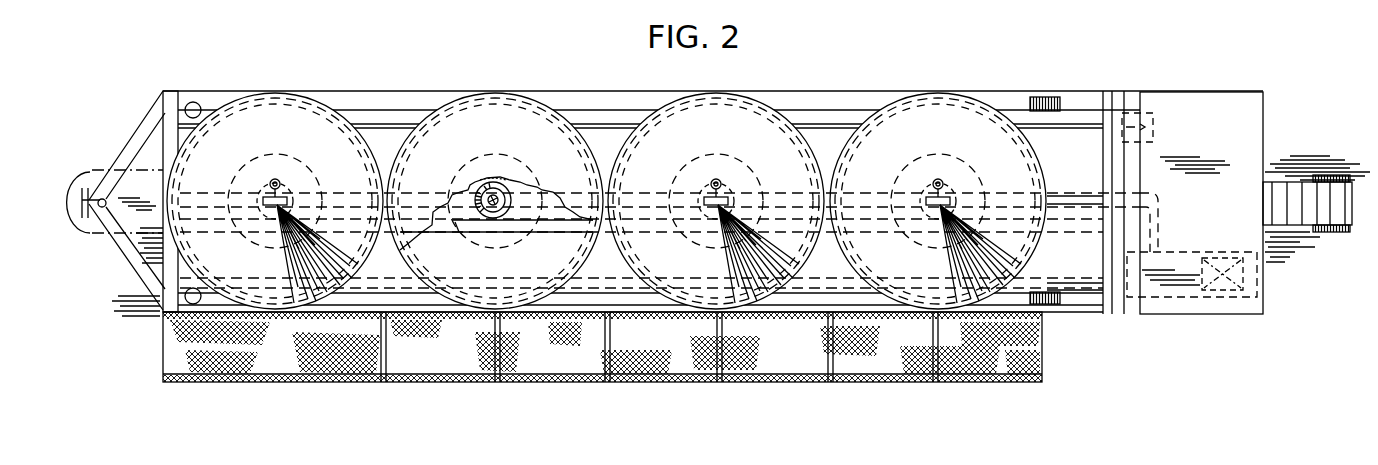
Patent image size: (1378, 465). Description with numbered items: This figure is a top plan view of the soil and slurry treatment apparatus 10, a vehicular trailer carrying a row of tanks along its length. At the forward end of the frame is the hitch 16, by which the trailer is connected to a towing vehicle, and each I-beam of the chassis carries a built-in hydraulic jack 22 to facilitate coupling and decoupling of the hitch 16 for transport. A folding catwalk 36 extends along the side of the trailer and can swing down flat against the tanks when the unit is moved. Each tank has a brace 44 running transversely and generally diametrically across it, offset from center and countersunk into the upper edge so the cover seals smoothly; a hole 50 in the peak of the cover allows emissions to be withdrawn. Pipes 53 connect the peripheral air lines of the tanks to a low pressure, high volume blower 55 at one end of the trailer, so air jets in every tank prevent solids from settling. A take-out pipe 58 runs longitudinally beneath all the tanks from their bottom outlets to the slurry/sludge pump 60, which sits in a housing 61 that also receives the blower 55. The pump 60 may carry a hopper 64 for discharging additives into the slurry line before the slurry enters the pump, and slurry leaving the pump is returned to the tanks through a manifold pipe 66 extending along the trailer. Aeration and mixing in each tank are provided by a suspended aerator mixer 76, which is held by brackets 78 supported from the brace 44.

The soil and slurry treatment apparatus 10 is at (445, 85).
The hitch 16 is at (73, 213).
The hydraulic jack 22 is at (198, 102).
The folding catwalk 36 is at (163, 348).
The brace 44 is at (552, 228).
The hole 50 is at (723, 176).
The pipes 53 is at (832, 120).
The blower 55 is at (1153, 113).
The pipe 58 is at (1083, 242).
The slurry/sludge pump 60 is at (1182, 300).
The housing 61 is at (1230, 102).
The hopper 64 is at (1225, 303).
The manifold pipe 66 is at (1055, 278).
The suspended aerator mixer 76 is at (503, 193).
The brackets 78 is at (455, 231).